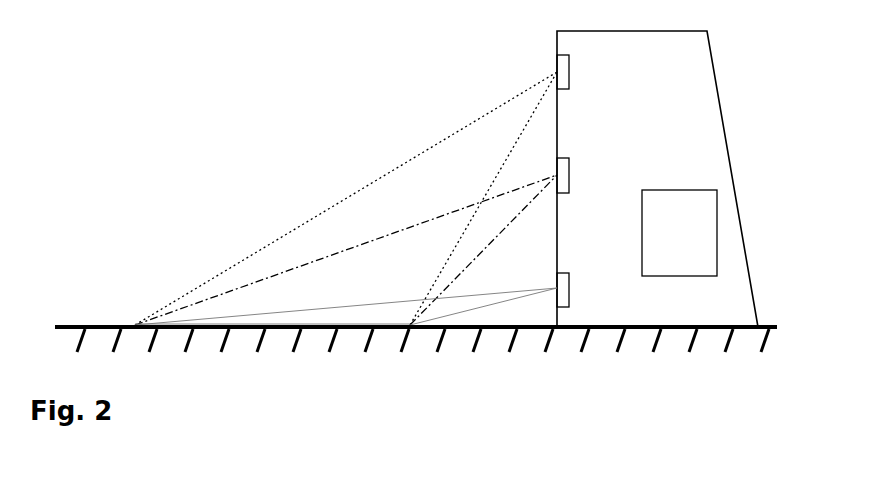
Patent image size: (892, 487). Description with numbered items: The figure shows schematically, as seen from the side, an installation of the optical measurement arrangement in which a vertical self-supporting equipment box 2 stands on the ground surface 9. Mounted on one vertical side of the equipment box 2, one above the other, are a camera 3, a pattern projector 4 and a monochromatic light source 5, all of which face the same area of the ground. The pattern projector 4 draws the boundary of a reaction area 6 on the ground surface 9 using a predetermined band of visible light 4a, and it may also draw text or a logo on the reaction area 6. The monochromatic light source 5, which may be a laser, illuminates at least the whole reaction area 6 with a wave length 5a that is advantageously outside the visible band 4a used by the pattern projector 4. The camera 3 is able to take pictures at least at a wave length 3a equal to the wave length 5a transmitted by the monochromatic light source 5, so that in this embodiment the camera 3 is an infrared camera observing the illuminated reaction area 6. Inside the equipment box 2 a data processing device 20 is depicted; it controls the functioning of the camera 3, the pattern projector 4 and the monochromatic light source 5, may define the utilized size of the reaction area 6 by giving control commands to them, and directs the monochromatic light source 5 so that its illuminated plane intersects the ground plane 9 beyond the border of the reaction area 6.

The vertical self-supporting equipment box 2 is at (731, 97).
The camera 3 is at (569, 70).
The pattern projector 4 is at (569, 173).
The monochromatic light source 5 is at (569, 298).
The wave length 3a is at (485, 130).
The predetermined band of visible light 4a is at (440, 230).
The wave length 5a is at (512, 300).
The reaction area 6 is at (308, 330).
The ground surface 9 is at (78, 326).
The data processing device 20 is at (679, 233).